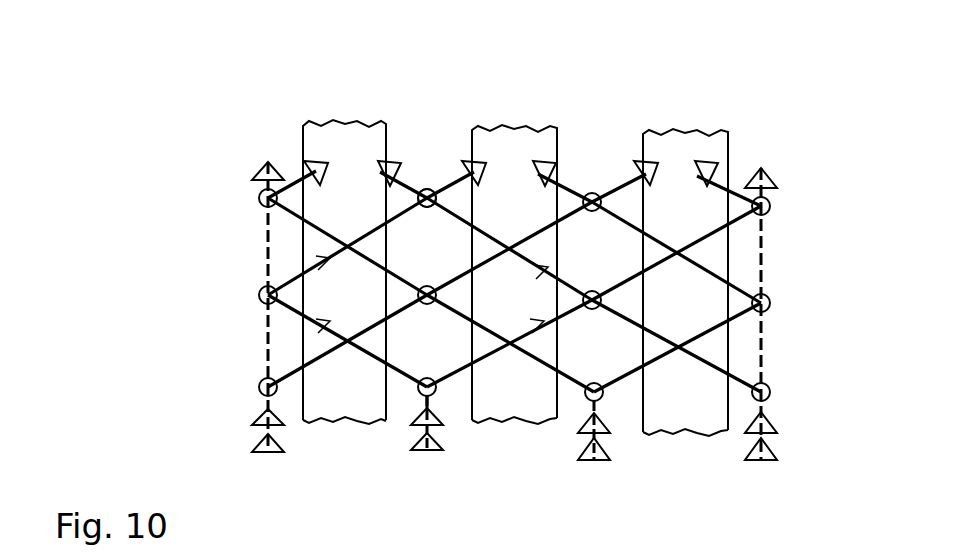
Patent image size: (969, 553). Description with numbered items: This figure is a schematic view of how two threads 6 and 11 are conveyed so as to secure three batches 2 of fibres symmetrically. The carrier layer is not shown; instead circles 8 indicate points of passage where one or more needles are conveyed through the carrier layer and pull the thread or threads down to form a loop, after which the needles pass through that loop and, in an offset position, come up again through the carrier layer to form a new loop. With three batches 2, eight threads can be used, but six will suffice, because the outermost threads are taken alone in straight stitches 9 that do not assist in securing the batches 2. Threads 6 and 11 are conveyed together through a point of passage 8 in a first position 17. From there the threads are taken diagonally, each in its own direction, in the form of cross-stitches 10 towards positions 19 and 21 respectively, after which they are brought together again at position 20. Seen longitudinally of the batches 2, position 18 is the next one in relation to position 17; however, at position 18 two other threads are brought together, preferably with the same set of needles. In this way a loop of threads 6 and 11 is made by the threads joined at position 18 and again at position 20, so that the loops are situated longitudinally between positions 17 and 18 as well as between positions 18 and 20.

The batch 2 is at (343, 121).
The thread 6 is at (420, 397).
The point of passage 8 is at (770, 292).
The straight stitch 9 is at (266, 247).
The cross-stitch 10 is at (473, 362).
The thread 11 is at (433, 402).
The first position 17 is at (416, 386).
The position 18 is at (418, 294).
The position 19 is at (258, 297).
The position 20 is at (424, 188).
The position 21 is at (601, 309).